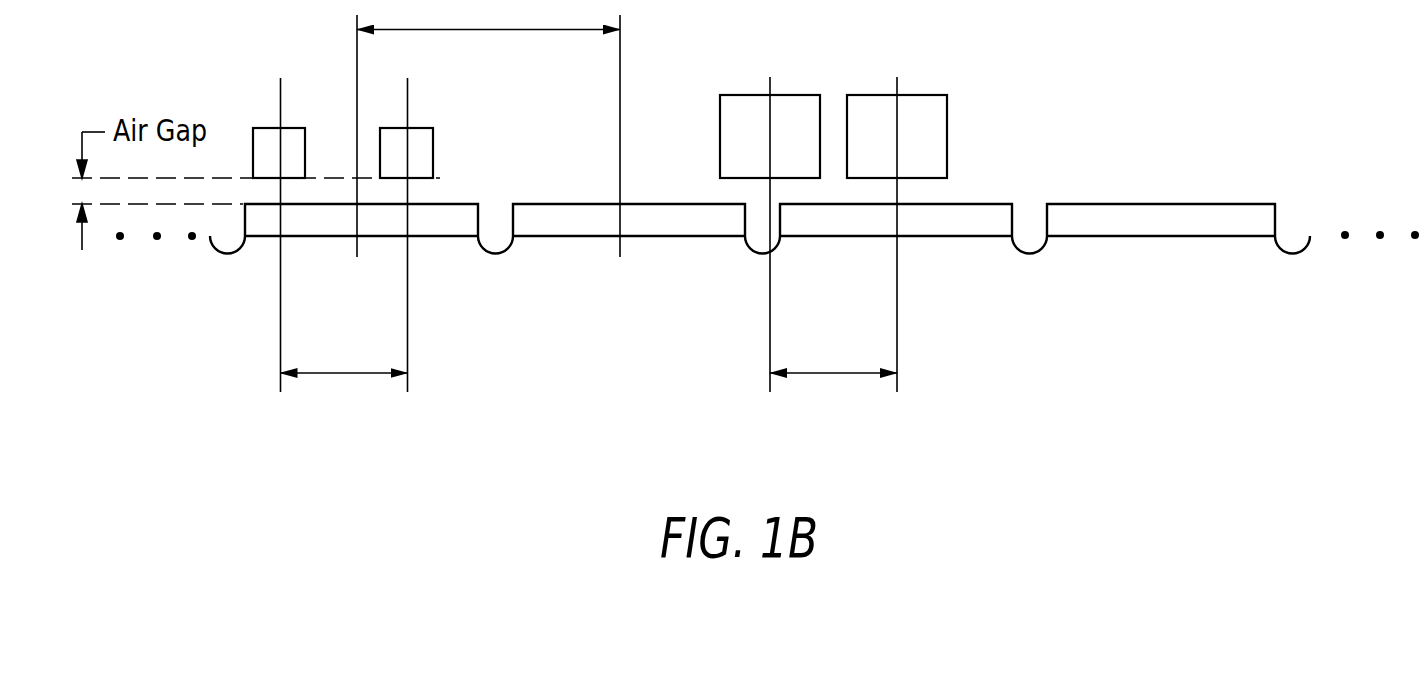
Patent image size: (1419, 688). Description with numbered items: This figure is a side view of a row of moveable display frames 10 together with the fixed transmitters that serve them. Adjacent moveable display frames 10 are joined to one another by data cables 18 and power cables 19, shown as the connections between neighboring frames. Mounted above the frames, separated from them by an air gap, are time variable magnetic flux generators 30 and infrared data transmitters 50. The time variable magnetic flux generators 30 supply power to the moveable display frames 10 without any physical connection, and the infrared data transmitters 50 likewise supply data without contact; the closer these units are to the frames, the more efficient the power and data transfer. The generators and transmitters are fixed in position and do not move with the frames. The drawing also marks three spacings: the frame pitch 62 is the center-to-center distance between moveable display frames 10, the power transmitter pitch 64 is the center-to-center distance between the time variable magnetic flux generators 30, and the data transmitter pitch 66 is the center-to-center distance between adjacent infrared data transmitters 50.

The moveable display frame 10 is at (390, 238).
The data cable 18 is at (760, 272).
The power cable 19 is at (213, 247).
The time variable magnetic flux generator 30 is at (720, 120).
The infrared data transmitter 50 is at (266, 127).
The frame pitch 62 is at (478, 31).
The power transmitter pitch 64 is at (833, 375).
The data transmitter pitch 66 is at (338, 375).